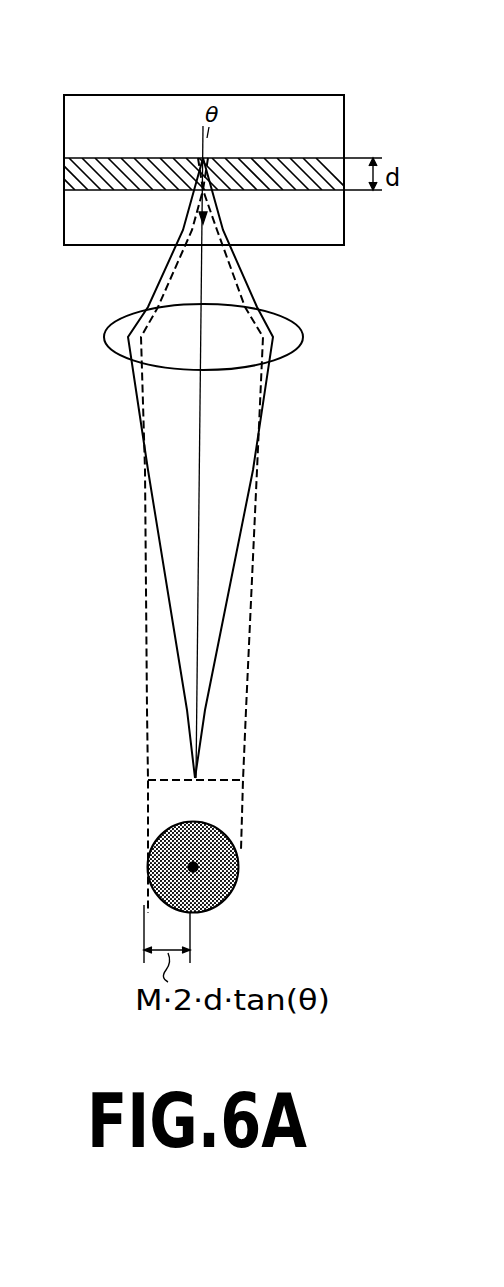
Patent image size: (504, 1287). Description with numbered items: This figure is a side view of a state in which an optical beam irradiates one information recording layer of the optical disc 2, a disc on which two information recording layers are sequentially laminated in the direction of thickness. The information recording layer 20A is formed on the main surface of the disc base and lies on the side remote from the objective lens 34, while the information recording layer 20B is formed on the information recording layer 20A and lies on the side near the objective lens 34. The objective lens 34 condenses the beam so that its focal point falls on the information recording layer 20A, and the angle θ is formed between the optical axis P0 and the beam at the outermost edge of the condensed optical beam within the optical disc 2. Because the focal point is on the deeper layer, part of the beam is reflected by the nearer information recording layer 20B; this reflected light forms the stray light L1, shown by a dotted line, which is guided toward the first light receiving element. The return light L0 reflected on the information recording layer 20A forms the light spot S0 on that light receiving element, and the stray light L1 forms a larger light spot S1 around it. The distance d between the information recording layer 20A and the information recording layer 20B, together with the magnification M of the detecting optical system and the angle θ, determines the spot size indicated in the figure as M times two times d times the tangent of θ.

The optical disc 2 is at (337, 118).
The information recording layer 20A is at (232, 158).
The information recording layer 20B is at (265, 158).
The objective lens 34 is at (303, 337).
The optical axis P0 is at (202, 437).
The return light L0 is at (170, 603).
The stray light L1 is at (252, 583).
The light spot S0 is at (197, 870).
The light spot S1 is at (228, 832).